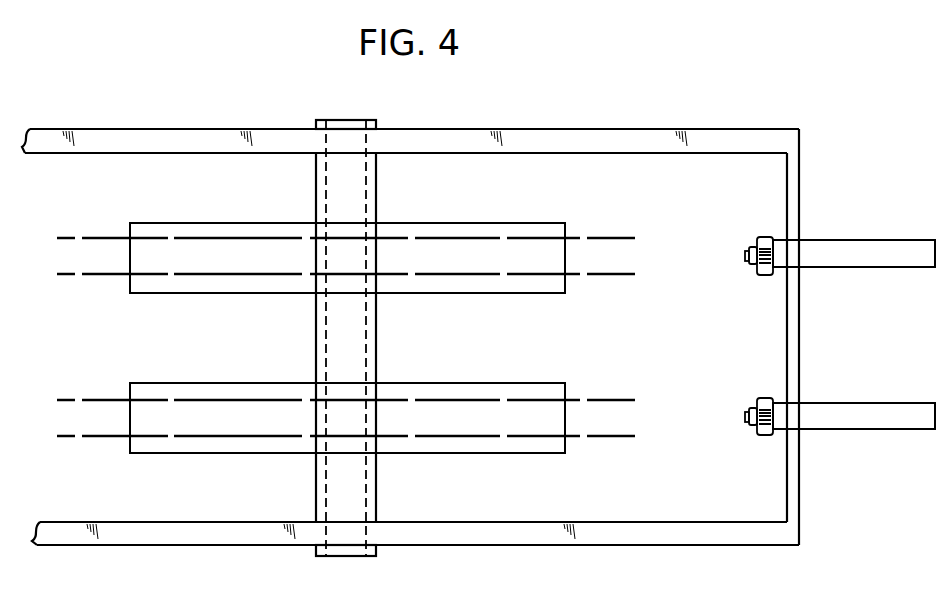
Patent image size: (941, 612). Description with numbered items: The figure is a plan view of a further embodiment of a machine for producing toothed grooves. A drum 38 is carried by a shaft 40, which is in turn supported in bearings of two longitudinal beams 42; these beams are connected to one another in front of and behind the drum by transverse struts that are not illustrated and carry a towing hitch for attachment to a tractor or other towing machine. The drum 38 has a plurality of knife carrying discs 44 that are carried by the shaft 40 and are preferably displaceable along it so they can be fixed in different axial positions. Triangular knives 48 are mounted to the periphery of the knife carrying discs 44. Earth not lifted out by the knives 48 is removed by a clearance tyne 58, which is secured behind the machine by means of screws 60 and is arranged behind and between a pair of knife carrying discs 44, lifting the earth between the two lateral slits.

The drum 38 is at (346, 338).
The shaft 40 is at (370, 342).
The longitudinal beams 42 is at (650, 137).
The knife carrying discs 44 is at (473, 229).
The triangular knives 48 is at (249, 238).
The clearance tyne 58 is at (878, 252).
The screws 60 is at (749, 255).